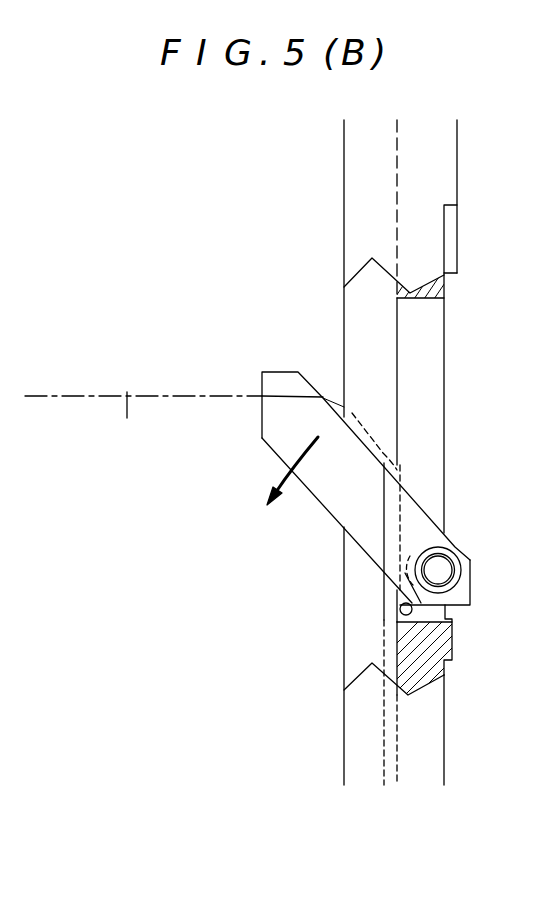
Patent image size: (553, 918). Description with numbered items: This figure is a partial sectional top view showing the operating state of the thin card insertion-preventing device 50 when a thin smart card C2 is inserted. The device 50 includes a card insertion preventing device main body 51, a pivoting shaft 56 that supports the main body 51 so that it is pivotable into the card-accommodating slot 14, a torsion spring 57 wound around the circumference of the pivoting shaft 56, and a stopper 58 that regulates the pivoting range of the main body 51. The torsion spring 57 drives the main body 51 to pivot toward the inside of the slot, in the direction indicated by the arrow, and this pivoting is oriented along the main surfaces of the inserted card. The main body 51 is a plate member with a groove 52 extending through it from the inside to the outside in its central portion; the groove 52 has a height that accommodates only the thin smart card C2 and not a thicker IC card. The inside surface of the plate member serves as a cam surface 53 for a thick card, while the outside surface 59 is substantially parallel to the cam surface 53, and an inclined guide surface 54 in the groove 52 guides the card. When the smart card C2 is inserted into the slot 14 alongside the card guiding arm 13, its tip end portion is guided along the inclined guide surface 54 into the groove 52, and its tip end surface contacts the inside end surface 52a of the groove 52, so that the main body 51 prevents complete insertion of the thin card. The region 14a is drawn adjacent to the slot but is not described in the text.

The card guiding arm 13 is at (417, 735).
The card-accommodating slot 14 is at (362, 322).
The boss portion of frame member 14a is at (397, 617).
The thin smart card C2 is at (127, 398).
The thin card insertion-preventing device 50 is at (367, 497).
The card insertion preventing device main body 51 is at (425, 528).
The groove 52 is at (380, 487).
The inside end surface 52a is at (291, 400).
The cam surface 53 is at (305, 492).
The inclined guide surface 54 is at (407, 553).
The pivoting shaft 56 is at (441, 569).
The torsion spring 57 is at (452, 585).
The stopper 58 is at (400, 606).
The outside surface 59 is at (357, 437).